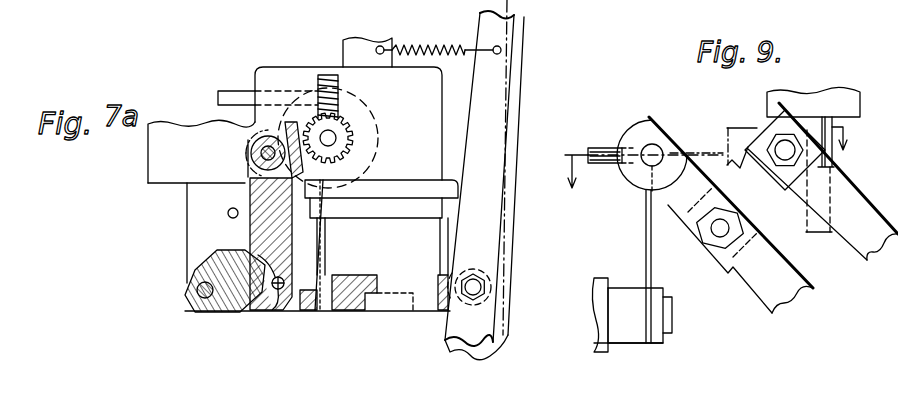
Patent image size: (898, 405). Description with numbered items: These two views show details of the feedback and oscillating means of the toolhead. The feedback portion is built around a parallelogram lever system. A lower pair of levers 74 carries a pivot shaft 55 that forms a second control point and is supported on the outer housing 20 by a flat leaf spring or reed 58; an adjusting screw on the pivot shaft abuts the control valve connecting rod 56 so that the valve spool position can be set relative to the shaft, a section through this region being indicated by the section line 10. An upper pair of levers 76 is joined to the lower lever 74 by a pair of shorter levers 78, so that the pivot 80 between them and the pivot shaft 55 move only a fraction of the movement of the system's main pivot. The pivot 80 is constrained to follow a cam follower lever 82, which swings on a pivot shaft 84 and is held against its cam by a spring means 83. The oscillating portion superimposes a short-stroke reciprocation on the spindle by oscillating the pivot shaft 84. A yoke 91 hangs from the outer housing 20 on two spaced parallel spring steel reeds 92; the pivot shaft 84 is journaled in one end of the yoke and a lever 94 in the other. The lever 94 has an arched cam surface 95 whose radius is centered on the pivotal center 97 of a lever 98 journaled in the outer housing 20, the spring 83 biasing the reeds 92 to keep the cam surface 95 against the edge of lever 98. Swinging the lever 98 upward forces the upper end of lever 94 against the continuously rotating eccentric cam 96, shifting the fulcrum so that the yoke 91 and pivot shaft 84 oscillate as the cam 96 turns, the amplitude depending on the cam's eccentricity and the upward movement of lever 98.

In FIG. 9, the section line 10 is at (708, 157).
In FIG. 7A, the outer housing 20 is at (417, 185).
In FIG. 9, the pivot shaft 55 is at (661, 143).
In FIG. 9, the control valve connecting rod 56 is at (612, 142).
In FIG. 9, the flat leaf spring or reed 58 is at (644, 238).
In FIG. 9, the lower pair of levers 74 is at (764, 301).
In FIG. 9, the upper pair of levers 76 is at (853, 250).
In FIG. 9, the levers 78 is at (722, 166).
In FIG. 9, the pivot 80 is at (773, 137).
In FIG. 7A, the cam follower lever 82 is at (505, 80).
In FIG. 9, the cam follower lever 82 is at (836, 96).
In FIG. 7A, the spring means 83 is at (436, 44).
In FIG. 7A, the pivot shaft 84 is at (475, 281).
In FIG. 7A, the yoke 91 is at (405, 309).
In FIG. 7A, the spring steel members or reeds 92 is at (320, 267).
In FIG. 7A, the lever 94 is at (247, 193).
In FIG. 7A, the cam surface 95 is at (263, 282).
In FIG. 7A, the eccentric cam 96 is at (380, 127).
In FIG. 7A, the pivotal center 97 is at (205, 280).
In FIG. 7A, the lever 98 is at (231, 284).